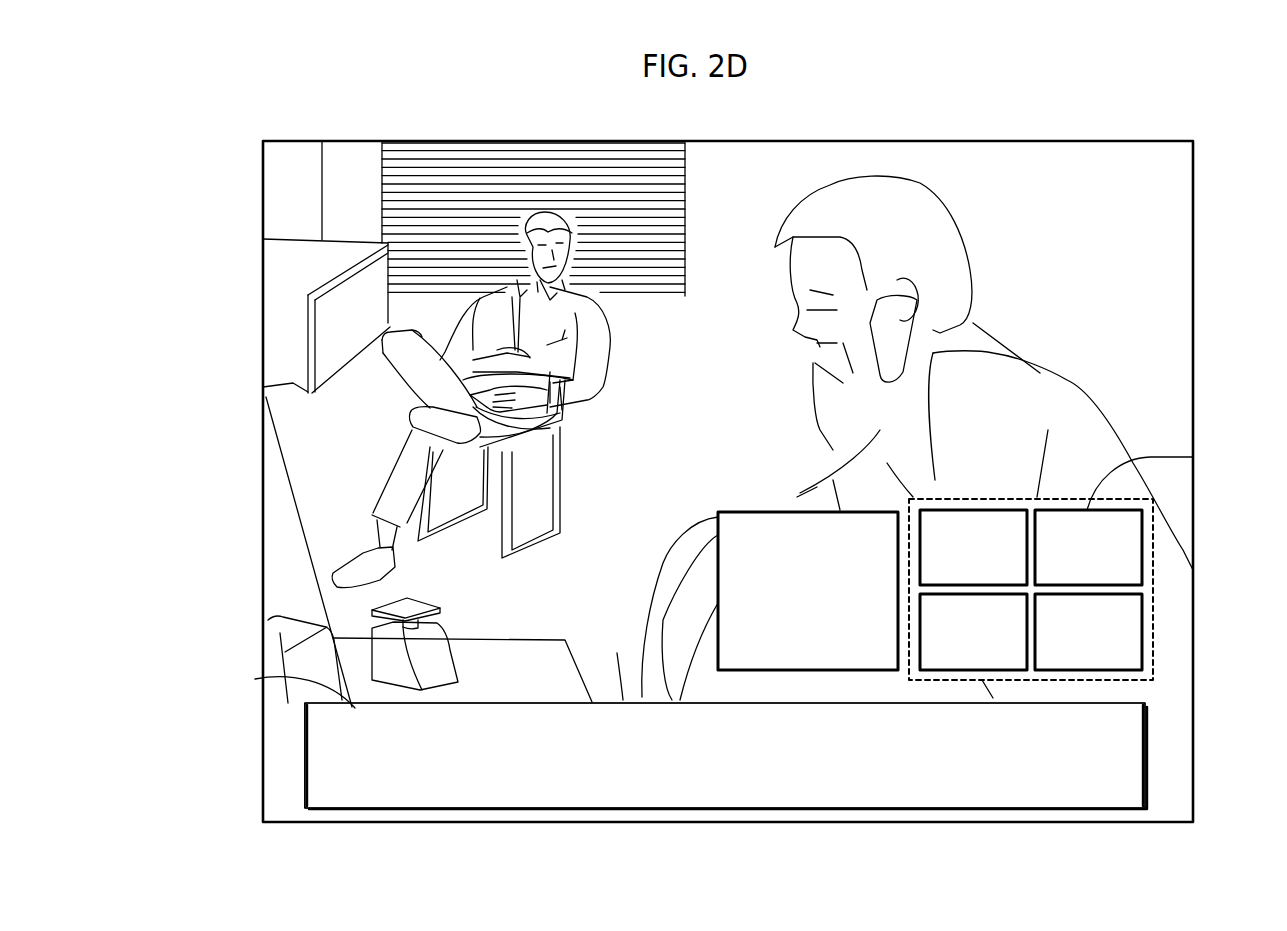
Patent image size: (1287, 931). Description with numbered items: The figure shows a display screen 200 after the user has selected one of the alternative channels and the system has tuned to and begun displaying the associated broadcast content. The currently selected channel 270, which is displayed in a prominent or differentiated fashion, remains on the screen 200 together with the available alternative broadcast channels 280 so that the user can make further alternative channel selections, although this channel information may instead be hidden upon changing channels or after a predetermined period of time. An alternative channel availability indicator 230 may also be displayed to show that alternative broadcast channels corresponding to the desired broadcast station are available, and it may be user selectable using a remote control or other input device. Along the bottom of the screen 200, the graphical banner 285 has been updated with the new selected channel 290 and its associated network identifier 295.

The screen 200 is at (1172, 257).
The selected channel 270 is at (720, 512).
The alternative broadcast channels 280 is at (1088, 499).
The alternative channel availability indicator 230 is at (1110, 722).
The graphical banner 285 is at (1145, 738).
The new selected channel 290 is at (362, 715).
The network identifier 295 is at (350, 800).